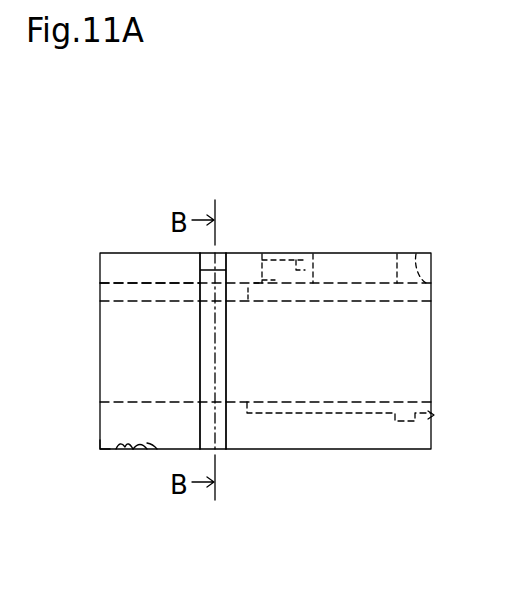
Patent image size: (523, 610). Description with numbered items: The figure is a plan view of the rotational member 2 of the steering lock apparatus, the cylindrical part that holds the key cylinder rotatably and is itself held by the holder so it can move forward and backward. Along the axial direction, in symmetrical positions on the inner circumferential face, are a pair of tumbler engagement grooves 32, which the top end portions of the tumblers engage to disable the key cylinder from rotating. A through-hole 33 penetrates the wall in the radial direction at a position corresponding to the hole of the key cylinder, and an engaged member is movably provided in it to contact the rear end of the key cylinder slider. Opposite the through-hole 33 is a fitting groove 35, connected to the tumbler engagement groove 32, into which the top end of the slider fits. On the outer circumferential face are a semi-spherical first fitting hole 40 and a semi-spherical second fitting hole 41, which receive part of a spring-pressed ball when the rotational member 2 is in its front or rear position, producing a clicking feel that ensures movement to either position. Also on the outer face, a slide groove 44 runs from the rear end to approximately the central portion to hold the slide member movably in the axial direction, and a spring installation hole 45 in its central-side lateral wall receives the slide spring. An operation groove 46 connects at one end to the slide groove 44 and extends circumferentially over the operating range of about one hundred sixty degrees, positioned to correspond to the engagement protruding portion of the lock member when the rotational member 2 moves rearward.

The rotational member 2 is at (375, 447).
The tumbler engagement groove 32 is at (313, 290).
The through-hole 33 is at (422, 252).
The fitting groove 35 is at (436, 418).
The first fitting hole 40 is at (110, 455).
The second fitting hole 41 is at (145, 455).
The slide groove 44 is at (152, 270).
The spring installation hole 45 is at (313, 252).
The operation groove 46 is at (222, 322).